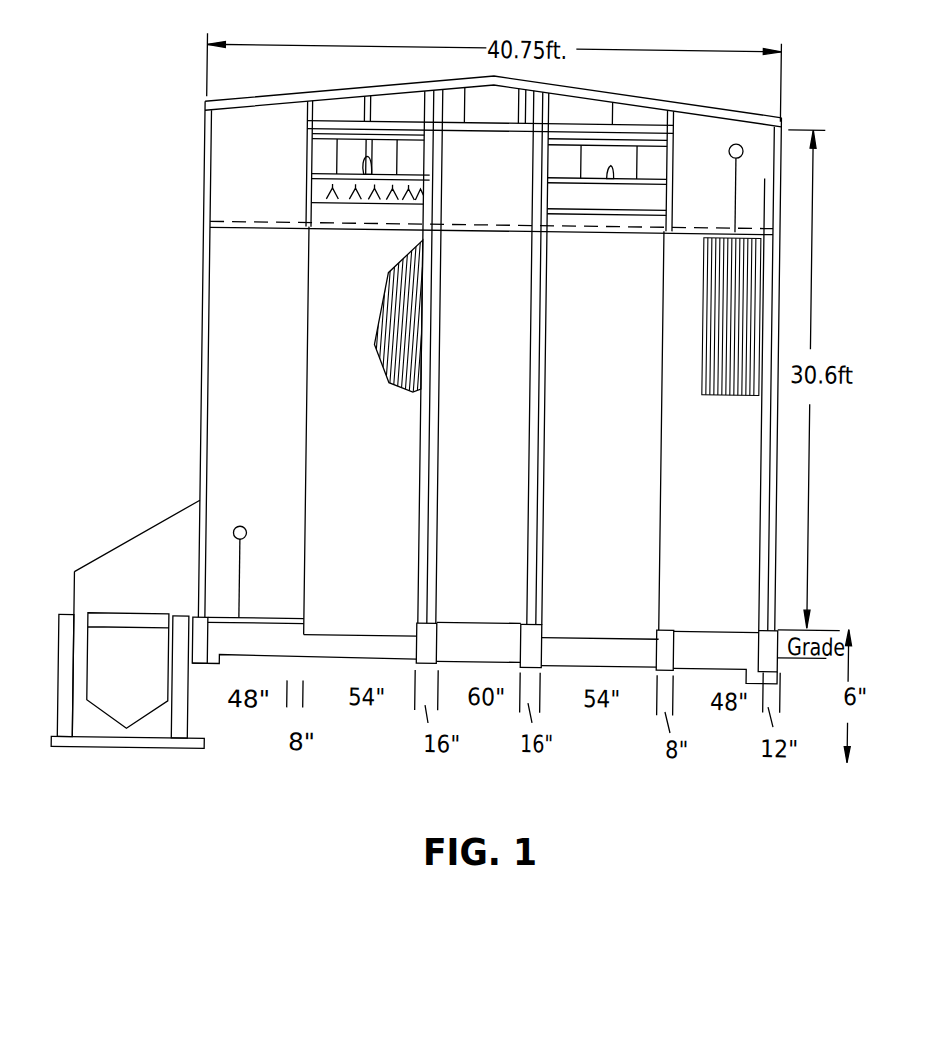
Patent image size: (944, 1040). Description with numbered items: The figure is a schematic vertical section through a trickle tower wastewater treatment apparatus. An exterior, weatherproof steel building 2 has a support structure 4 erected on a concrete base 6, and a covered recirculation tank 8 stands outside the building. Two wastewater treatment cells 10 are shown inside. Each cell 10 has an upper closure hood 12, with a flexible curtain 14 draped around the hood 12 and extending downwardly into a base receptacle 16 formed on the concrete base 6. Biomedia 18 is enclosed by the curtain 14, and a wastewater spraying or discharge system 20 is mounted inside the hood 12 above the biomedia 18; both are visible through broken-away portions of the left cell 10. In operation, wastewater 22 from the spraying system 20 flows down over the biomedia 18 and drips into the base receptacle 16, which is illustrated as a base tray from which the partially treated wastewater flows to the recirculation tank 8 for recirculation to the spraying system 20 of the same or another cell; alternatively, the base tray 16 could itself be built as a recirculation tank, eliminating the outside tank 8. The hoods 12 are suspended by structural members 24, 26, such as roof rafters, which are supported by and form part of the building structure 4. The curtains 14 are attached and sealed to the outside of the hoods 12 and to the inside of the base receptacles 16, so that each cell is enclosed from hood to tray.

The steel building 2 is at (160, 264).
The support structure 4 is at (210, 356).
The concrete base 6 is at (567, 671).
The recirculation tank 8 is at (142, 678).
The wastewater treatment cell 10 is at (292, 254).
The upper closure hood 12 is at (320, 169).
The flexible curtain 14 is at (322, 421).
The base receptacle 16 is at (338, 650).
The biomedia 18 is at (406, 324).
The wastewater spraying system 20 is at (360, 165).
The wastewater 22 is at (340, 187).
The structural member 24 is at (509, 130).
The structural member 26 is at (496, 85).